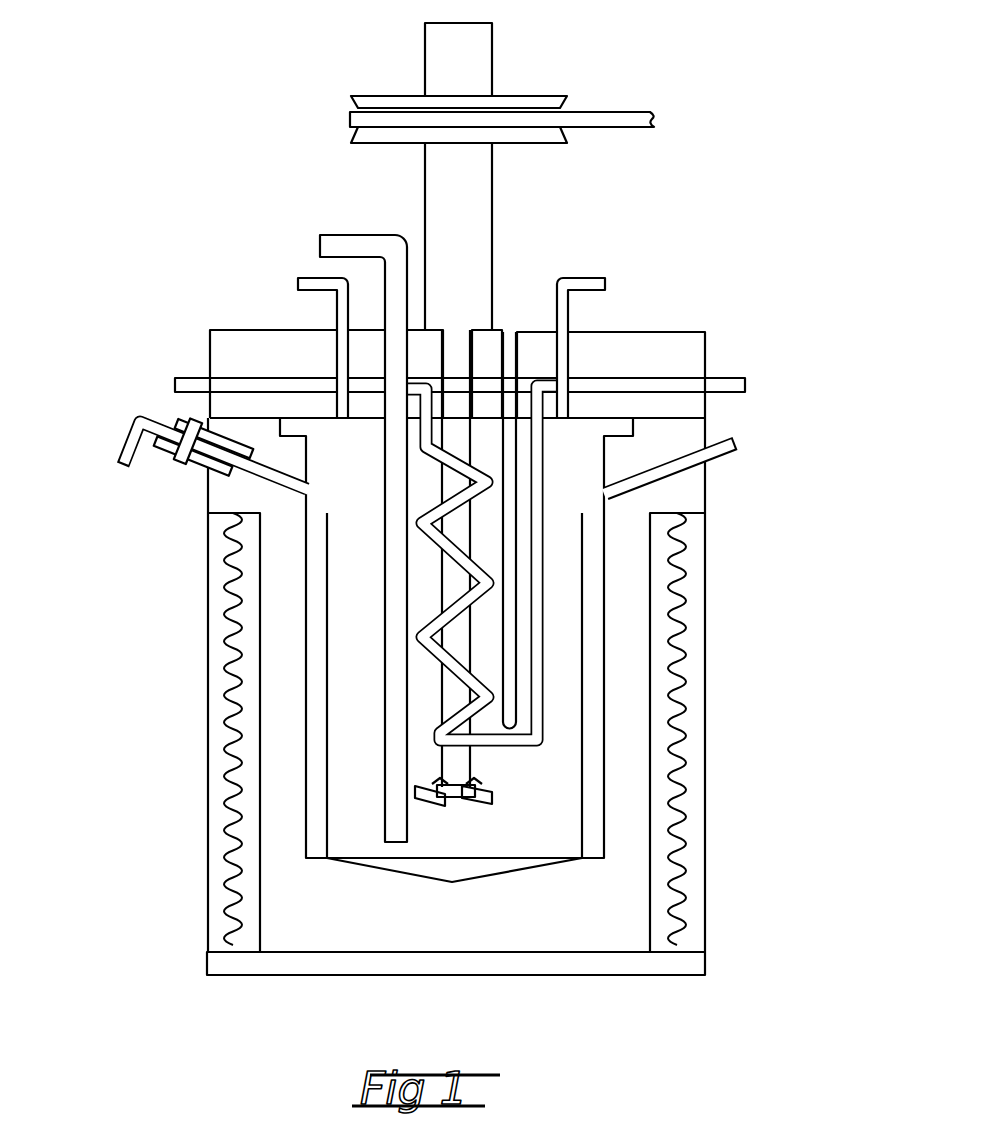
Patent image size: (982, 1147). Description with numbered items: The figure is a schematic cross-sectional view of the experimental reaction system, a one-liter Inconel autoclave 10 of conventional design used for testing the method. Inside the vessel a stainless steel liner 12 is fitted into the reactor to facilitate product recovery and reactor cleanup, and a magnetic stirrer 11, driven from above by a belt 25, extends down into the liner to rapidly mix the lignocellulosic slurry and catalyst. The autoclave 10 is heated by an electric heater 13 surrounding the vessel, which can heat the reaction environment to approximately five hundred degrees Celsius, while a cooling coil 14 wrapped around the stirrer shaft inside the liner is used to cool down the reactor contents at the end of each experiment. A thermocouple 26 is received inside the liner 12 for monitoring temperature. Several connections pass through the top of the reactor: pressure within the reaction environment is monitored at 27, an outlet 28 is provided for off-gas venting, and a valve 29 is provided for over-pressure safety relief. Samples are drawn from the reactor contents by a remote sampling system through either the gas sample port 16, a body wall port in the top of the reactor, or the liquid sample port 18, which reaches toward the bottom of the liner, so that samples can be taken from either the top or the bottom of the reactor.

The autoclave 10 is at (148, 818).
The magnetic stirrer 11 is at (492, 796).
The stainless steel liner 12 is at (580, 838).
The electric heater 13 is at (690, 840).
The cooling coil 14 is at (535, 717).
The gas sample port 16 is at (725, 448).
The liquid sample port 18 is at (345, 248).
The belt 25 is at (590, 100).
The thermocouple 26 is at (510, 333).
The pressure monitoring point 27 is at (300, 284).
The outlet 28 is at (593, 285).
The valve 29 is at (190, 468).